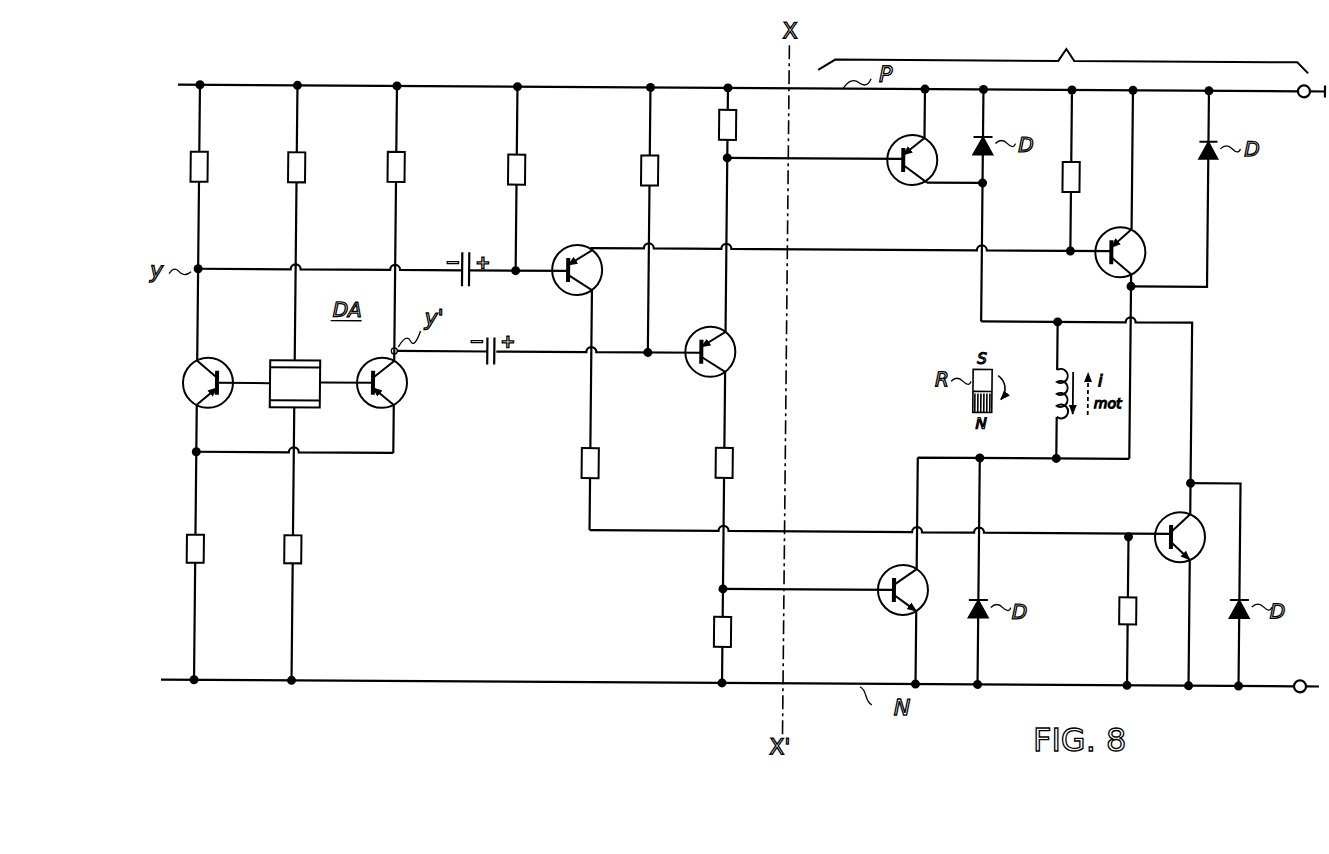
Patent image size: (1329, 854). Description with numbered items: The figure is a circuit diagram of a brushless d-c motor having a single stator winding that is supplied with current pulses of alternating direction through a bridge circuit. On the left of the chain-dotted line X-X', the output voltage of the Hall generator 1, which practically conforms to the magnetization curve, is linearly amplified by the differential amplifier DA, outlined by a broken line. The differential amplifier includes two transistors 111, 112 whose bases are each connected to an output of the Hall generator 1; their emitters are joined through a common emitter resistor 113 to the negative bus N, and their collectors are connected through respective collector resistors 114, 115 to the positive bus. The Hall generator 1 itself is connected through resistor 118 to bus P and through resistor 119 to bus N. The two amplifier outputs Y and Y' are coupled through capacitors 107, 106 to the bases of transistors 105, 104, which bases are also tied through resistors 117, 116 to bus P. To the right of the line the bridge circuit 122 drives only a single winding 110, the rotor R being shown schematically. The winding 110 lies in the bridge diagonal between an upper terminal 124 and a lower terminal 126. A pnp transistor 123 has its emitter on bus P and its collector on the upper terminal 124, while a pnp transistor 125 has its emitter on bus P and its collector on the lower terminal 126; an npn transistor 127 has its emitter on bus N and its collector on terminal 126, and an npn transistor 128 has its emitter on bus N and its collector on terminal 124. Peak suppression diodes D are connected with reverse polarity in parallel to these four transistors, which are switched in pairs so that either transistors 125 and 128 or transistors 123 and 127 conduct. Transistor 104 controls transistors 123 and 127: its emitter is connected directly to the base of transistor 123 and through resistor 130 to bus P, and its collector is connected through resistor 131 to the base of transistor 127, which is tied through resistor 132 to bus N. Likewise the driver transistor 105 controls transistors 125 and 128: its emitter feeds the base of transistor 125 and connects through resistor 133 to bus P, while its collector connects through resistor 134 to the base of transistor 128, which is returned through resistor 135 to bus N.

The Hall generator 1 is at (280, 360).
The transistor 104 is at (730, 342).
The driver transistor 105 is at (580, 247).
The capacitor 106 is at (496, 356).
The capacitor 107 is at (466, 250).
The winding 110 is at (1050, 365).
The transistor 111 is at (190, 381).
The transistor 112 is at (404, 396).
The common emitter resistor 113 is at (189, 555).
The collector resistor 114 is at (188, 172).
The collector resistor 115 is at (403, 167).
The resistor 116 is at (656, 169).
The resistor 117 is at (523, 169).
The resistor 118 is at (303, 168).
The resistor 119 is at (303, 553).
The bridge circuit 122 is at (1089, 35).
The pnp transistor 123 is at (907, 190).
The upper terminal 124 is at (1082, 307).
The pnp transistor 125 is at (1142, 245).
The lower terminal 126 is at (1055, 461).
The npn transistor 127 is at (892, 570).
The npn transistor 128 is at (1172, 514).
The resistor 130 is at (716, 129).
The resistor 131 is at (716, 469).
The resistor 132 is at (716, 634).
The resistor 133 is at (1060, 184).
The resistor 134 is at (581, 469).
The resistor 135 is at (1120, 608).